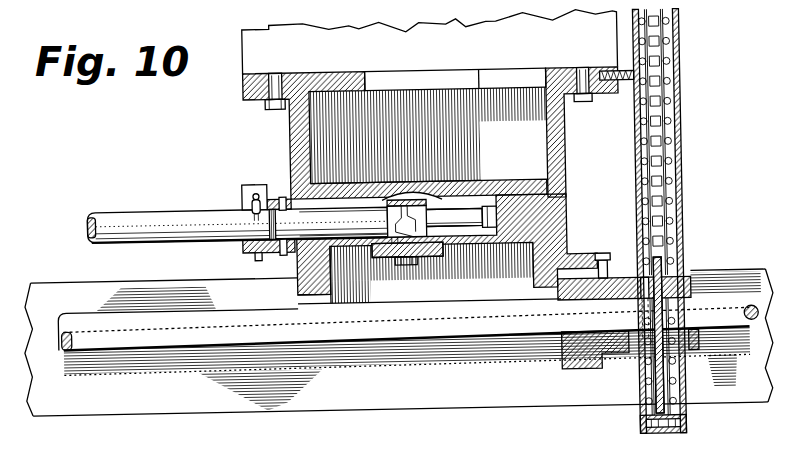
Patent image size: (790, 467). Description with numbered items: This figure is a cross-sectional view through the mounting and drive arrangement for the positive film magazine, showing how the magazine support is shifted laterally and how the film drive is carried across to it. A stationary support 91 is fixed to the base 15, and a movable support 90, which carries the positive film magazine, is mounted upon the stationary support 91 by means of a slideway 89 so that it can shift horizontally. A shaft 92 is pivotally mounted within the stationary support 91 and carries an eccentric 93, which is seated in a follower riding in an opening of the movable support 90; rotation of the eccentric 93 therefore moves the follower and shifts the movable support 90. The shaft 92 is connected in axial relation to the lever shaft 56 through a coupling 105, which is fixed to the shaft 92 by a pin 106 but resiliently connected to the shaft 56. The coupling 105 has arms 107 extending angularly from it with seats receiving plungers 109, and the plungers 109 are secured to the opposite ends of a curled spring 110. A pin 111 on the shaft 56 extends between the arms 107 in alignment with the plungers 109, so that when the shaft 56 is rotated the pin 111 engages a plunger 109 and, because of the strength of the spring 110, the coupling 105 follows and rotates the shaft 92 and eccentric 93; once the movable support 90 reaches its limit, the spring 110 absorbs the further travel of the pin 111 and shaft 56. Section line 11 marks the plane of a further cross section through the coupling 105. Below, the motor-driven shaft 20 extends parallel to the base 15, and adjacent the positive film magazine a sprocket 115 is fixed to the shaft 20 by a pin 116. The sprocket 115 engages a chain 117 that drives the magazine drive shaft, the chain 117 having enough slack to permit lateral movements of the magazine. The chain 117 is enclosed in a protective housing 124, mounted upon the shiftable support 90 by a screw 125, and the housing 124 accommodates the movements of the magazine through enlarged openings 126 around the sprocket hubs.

The section line 11- 11 is at (192, 207).
The base 15 is at (606, 276).
The shaft 20 is at (733, 312).
The shaft 56 is at (129, 207).
The slideway 89 is at (395, 265).
The movable support 90 is at (567, 153).
The stationary support 91 is at (560, 233).
The shaft 92 is at (368, 214).
The eccentric 93 is at (420, 199).
The coupling 105 is at (270, 196).
The pin 106 is at (283, 194).
The arms 107 is at (243, 184).
The plungers 109 is at (257, 191).
The curled spring 110 is at (258, 253).
The pin 111 is at (253, 200).
The sprocket 115 is at (690, 360).
The pin 116 is at (637, 360).
The chain 117 is at (668, 168).
The protective housing 124 is at (683, 128).
The screw 125 is at (633, 90).
The enlarged openings 126 is at (672, 282).